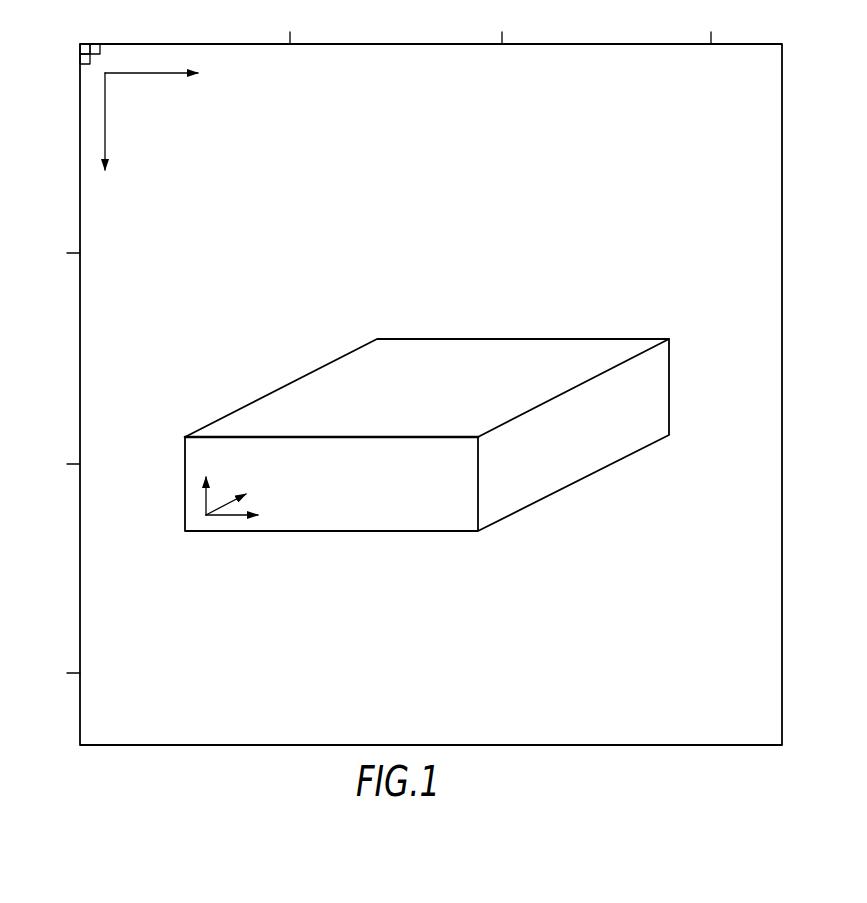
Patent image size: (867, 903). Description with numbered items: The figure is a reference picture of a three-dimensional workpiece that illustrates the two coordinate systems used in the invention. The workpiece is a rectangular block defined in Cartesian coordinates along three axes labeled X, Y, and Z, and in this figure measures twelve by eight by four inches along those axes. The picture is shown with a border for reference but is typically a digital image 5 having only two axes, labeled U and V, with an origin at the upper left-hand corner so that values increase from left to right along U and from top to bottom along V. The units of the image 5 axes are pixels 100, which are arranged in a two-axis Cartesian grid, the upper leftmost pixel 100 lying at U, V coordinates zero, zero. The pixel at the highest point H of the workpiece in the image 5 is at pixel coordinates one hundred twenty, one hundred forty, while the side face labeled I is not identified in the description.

The image 5 is at (202, 721).
The pixel 100 is at (85, 47).
The highest point H is at (378, 338).
The object side surface I is at (653, 397).